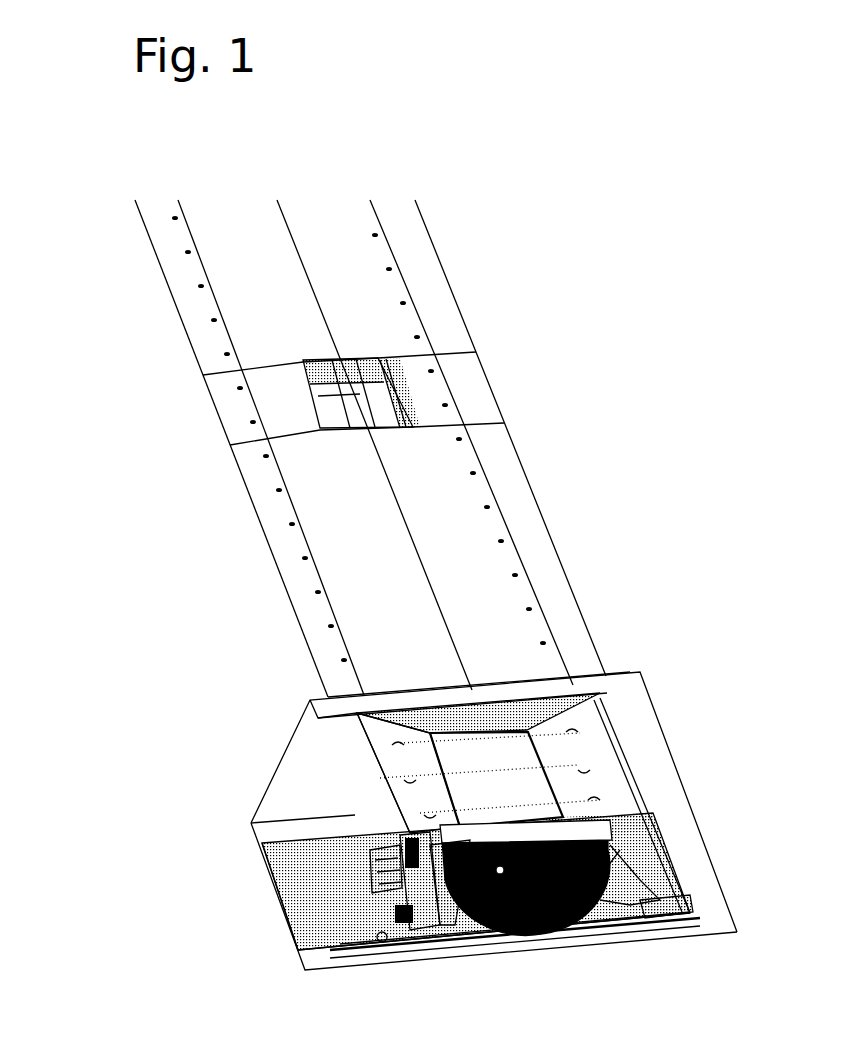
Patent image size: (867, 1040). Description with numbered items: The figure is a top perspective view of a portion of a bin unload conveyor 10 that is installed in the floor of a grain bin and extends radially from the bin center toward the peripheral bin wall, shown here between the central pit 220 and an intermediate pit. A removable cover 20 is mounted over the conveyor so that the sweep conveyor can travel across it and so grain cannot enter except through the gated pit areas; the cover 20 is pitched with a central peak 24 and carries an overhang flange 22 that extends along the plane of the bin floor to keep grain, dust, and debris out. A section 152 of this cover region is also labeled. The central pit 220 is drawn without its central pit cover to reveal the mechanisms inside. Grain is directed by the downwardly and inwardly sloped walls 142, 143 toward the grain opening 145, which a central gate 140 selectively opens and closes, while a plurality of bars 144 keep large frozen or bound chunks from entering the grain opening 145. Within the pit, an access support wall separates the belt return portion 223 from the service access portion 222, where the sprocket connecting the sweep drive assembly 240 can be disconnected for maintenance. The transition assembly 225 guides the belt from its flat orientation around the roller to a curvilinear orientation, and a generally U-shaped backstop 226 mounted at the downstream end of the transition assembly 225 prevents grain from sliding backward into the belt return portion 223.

The bin unload conveyor 10 is at (100, 339).
The cover 20 is at (279, 326).
The overhang flange 22 is at (445, 314).
The central peak 24 is at (300, 260).
The side panel section 152 is at (497, 381).
The central pit 220 is at (298, 758).
The service access portion 222 is at (312, 890).
The belt return portion 223 is at (680, 905).
The transition assembly 225 is at (663, 877).
The backstop 226 is at (617, 833).
The sweep drive assembly 240 is at (382, 937).
The central gate 140 is at (507, 765).
The sloped wall 142 is at (602, 759).
The sloped wall 143 is at (425, 775).
The bars 144 is at (550, 805).
The grain opening 145 is at (527, 728).